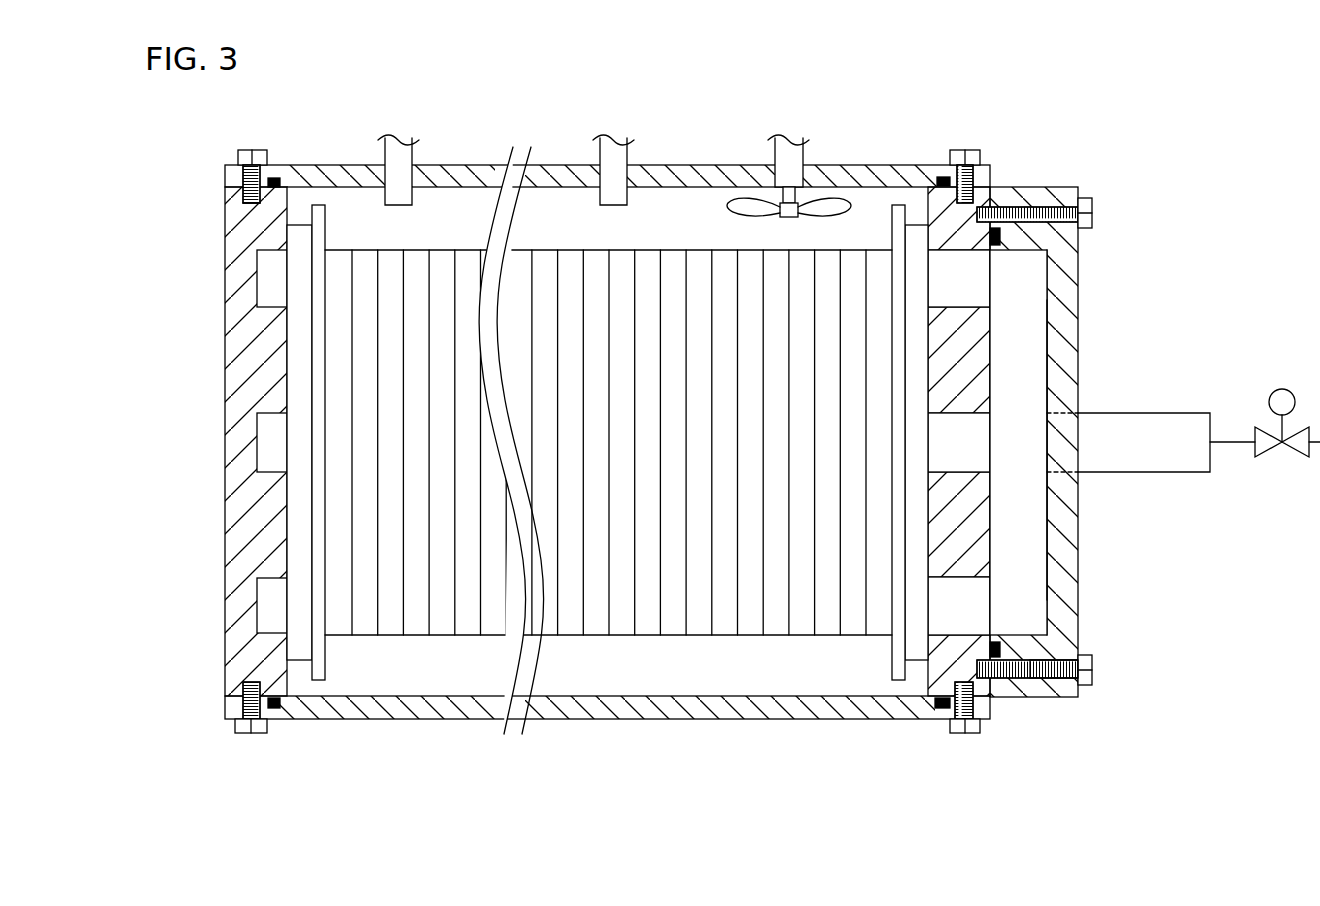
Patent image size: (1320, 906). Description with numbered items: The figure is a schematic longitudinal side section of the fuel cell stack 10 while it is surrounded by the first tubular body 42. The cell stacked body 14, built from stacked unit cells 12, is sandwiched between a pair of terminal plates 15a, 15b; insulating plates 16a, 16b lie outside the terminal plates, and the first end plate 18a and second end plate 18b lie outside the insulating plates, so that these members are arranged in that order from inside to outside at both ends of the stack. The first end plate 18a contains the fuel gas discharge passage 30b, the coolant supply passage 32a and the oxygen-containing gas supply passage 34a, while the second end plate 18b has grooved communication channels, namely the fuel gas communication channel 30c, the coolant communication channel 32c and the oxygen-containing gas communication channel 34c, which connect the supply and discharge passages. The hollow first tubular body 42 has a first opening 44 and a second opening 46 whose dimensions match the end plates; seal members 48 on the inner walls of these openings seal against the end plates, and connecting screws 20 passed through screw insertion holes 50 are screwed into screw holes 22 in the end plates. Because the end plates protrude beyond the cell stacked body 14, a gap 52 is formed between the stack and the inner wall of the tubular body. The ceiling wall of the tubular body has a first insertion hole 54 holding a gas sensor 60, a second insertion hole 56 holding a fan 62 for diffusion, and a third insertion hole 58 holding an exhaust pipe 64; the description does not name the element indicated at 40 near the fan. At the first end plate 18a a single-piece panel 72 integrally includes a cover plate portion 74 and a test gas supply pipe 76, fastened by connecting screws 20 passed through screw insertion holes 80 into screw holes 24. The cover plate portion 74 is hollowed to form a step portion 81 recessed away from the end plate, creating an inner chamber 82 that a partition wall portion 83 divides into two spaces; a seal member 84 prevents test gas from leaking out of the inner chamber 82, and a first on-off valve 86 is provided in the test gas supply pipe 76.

The fuel cell stack 10 is at (580, 247).
The unit cell 12 is at (641, 625).
The cell stacked body 14 is at (722, 617).
The terminal plate 15a is at (893, 212).
The terminal plate 15b is at (318, 532).
The insulating plate 16a is at (916, 238).
The insulating plate 16b is at (300, 500).
The first end plate 18a is at (973, 368).
The second end plate 18b is at (250, 360).
The connecting screw 20 is at (255, 160).
The screw hole 22 is at (250, 200).
The screw hole 24 is at (992, 670).
The fuel gas discharge passage 30b is at (973, 634).
The fuel gas communication channel 30c is at (262, 600).
The coolant supply passage 32a is at (973, 470).
The coolant communication channel 32c is at (262, 436).
The oxygen-containing gas supply passage 34a is at (973, 306).
The oxygen-containing gas communication channel 34c is at (262, 274).
The fan unit 40 is at (768, 167).
The first tubular body 42 is at (318, 178).
The first opening 44 is at (925, 692).
The second opening 46 is at (240, 695).
The seal member 48 is at (275, 706).
The screw insertion hole 50 is at (250, 172).
The gap 52 is at (661, 207).
The first insertion hole 54 is at (415, 178).
The second insertion hole 56 is at (795, 178).
The third insertion hole 58 is at (620, 178).
The gas sensor 60 is at (398, 142).
The fan 62 is at (745, 212).
The exhaust pipe 64 is at (612, 142).
The panel 72 is at (1082, 376).
The cover plate portion 74 is at (1068, 320).
The test gas supply pipe 76 is at (1140, 413).
The screw insertion hole 80 is at (1040, 670).
The step portion 81 is at (1043, 566).
The inner chamber 82 is at (1040, 500).
The partition wall portion 83 is at (1018, 578).
The seal member 84 is at (1002, 238).
The first on-off valve 86 is at (1284, 389).